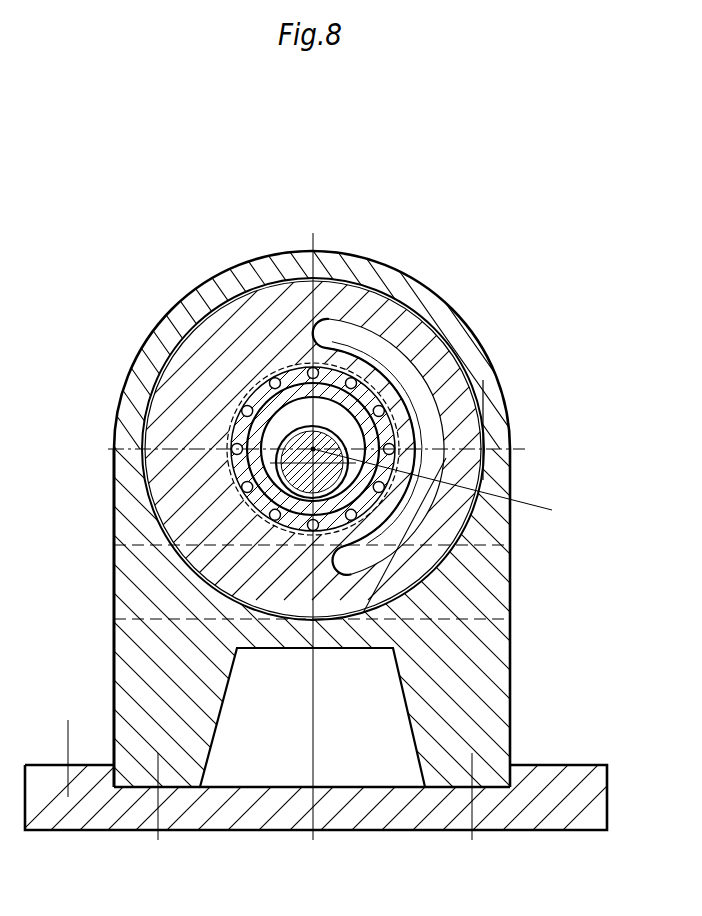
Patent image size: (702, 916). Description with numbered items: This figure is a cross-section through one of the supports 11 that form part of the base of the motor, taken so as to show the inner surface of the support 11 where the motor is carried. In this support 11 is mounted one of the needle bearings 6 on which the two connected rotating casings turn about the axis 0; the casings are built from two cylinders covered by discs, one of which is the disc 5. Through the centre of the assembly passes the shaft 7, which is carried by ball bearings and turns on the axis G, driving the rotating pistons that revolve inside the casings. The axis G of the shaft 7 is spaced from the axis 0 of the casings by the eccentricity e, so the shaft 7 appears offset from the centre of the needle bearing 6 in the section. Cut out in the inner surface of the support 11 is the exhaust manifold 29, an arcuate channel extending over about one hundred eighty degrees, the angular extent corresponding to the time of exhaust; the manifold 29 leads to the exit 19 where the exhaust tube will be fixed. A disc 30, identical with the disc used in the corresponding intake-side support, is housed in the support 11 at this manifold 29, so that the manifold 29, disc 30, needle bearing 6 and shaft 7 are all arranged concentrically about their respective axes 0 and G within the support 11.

The axis 0 is at (313, 449).
The disc 5 is at (357, 407).
The needle bearing 6 is at (262, 392).
The shaft 7 is at (290, 479).
The support 11 is at (462, 673).
The exit 19 is at (130, 582).
The exhaust manifold 29 is at (373, 343).
The disc 30 is at (203, 345).
The axis G is at (442, 488).